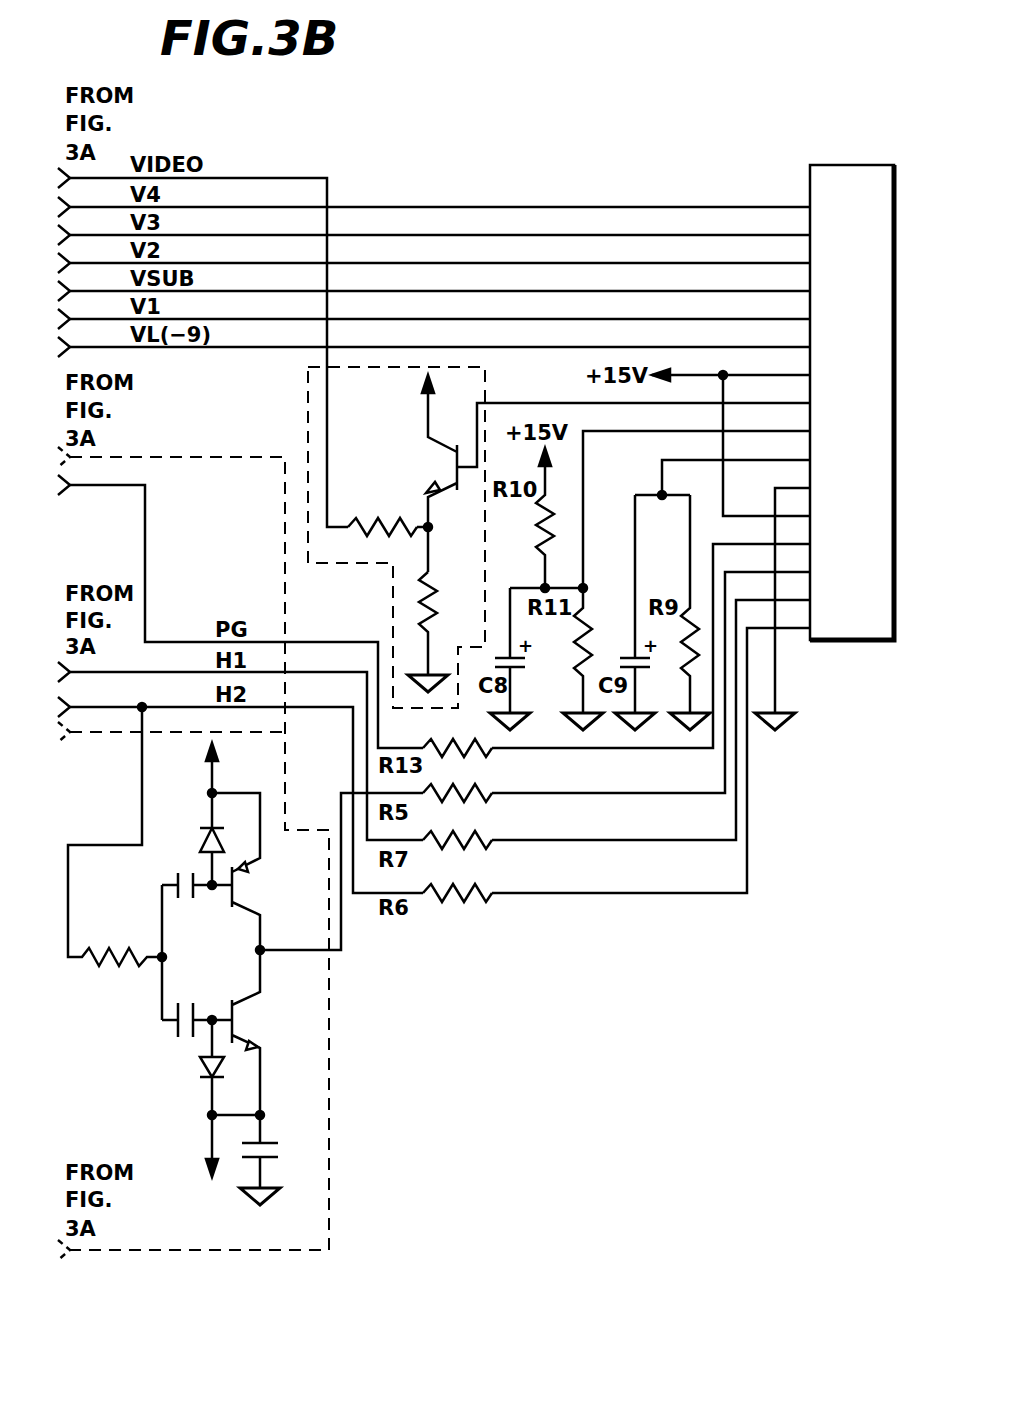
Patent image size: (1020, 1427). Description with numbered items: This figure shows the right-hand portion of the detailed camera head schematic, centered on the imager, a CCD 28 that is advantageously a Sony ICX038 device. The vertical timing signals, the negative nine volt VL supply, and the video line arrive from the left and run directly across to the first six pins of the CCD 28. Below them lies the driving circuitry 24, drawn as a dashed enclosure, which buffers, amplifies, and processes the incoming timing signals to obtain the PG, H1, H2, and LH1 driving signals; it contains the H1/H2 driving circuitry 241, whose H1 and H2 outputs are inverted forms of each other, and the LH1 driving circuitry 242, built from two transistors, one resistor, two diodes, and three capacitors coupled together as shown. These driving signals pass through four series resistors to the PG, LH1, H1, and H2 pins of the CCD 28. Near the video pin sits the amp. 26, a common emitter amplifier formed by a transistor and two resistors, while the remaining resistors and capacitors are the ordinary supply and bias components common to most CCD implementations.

The driving circuitry 24 is at (332, 1057).
The amp. 26 is at (486, 382).
The CCD 28 is at (810, 170).
The H1/H2 driving circuitry 241 is at (232, 530).
The LH1 driving circuitry 242 is at (118, 1097).